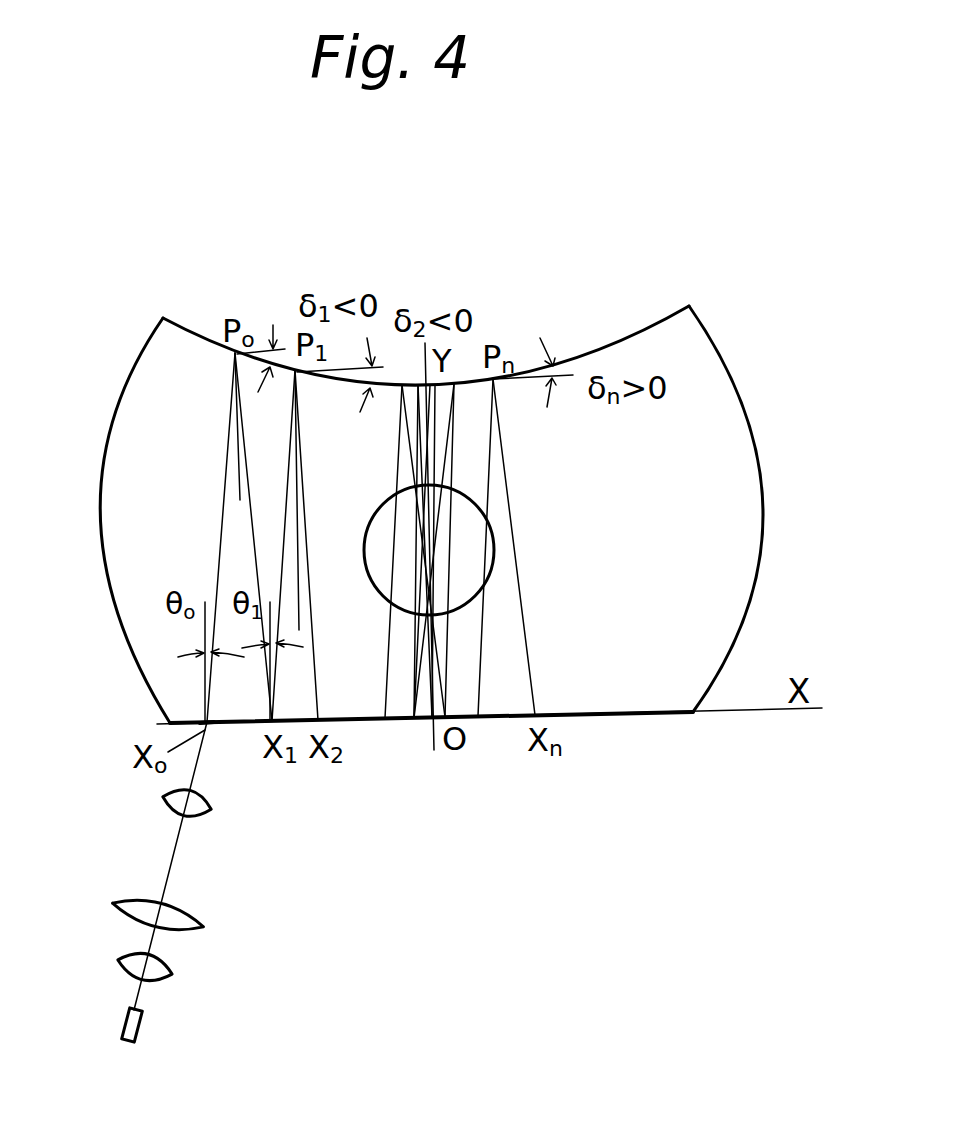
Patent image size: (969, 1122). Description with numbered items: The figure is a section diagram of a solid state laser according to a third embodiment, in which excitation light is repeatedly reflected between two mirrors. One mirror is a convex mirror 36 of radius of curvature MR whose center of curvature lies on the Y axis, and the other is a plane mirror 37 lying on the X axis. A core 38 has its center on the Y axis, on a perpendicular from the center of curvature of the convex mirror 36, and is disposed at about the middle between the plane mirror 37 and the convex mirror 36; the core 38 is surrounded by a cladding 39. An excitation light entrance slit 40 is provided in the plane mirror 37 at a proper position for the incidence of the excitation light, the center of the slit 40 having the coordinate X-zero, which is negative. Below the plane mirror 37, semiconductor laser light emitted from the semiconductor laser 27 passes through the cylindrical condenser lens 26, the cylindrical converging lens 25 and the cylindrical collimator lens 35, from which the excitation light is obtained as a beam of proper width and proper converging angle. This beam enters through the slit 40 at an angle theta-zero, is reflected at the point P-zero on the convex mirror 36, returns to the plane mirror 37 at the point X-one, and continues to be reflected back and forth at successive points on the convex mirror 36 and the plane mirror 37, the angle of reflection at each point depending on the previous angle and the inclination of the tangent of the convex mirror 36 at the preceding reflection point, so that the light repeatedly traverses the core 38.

The cylindrical converging lens 25 is at (200, 930).
The cylindrical condenser lens 26 is at (170, 973).
The semiconductor laser 27 is at (138, 1037).
The cylindrical collimator lens 35 is at (210, 812).
The convex mirror 36 is at (632, 334).
The plane mirror 37 is at (605, 717).
The core 38 is at (495, 546).
The cladding 39 is at (716, 389).
The excitation light entrance slit 40 is at (215, 727).